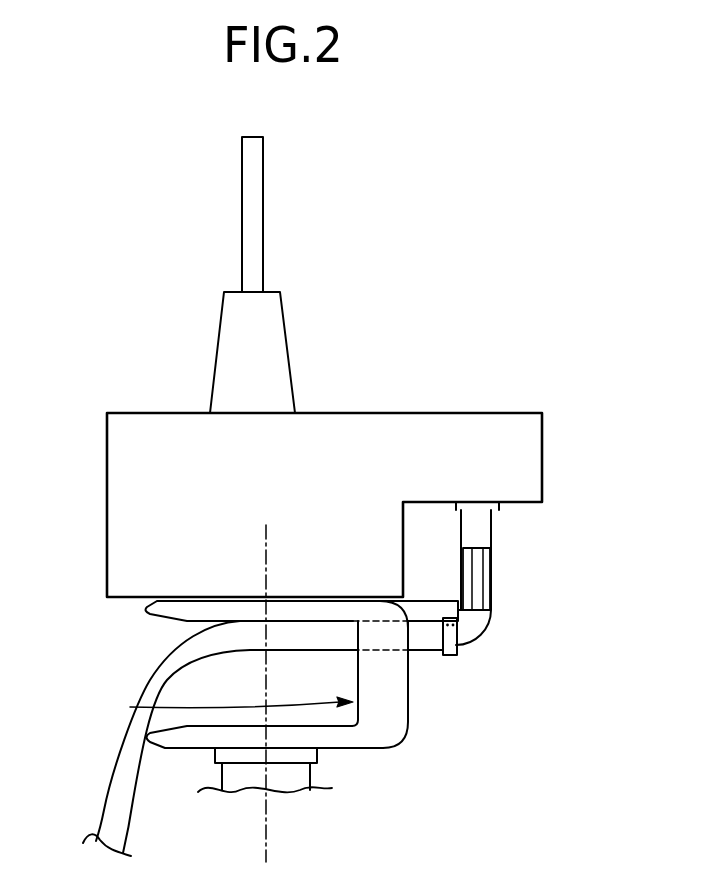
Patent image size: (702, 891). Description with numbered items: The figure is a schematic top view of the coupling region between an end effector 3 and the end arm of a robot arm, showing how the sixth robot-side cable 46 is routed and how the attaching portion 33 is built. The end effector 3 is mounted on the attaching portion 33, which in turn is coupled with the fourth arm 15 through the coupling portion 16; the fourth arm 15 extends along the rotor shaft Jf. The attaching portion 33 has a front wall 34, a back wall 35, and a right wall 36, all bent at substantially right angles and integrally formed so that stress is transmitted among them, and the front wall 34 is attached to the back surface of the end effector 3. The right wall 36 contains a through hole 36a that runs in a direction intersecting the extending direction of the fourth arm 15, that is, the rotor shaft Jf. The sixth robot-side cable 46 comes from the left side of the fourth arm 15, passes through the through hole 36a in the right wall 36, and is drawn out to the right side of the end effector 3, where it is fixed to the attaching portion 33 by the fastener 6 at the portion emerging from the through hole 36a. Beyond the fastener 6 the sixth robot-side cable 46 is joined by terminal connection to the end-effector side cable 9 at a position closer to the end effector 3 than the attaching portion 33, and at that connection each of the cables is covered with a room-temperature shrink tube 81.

The end effector 3 is at (542, 457).
The end-effector side cable 9 is at (492, 527).
The room-temperature shrink tube 81 is at (468, 562).
The fastener 6 is at (449, 633).
The attaching portion 33 is at (335, 684).
The front wall 34 is at (327, 612).
The back wall 35 is at (327, 741).
The right wall 36 is at (408, 712).
The through hole 36a is at (130, 707).
The sixth robot-side cable 46 is at (98, 789).
The coupling portion 16 is at (317, 752).
The fourth arm 15 is at (222, 780).
The rotor shaft Jf is at (268, 836).